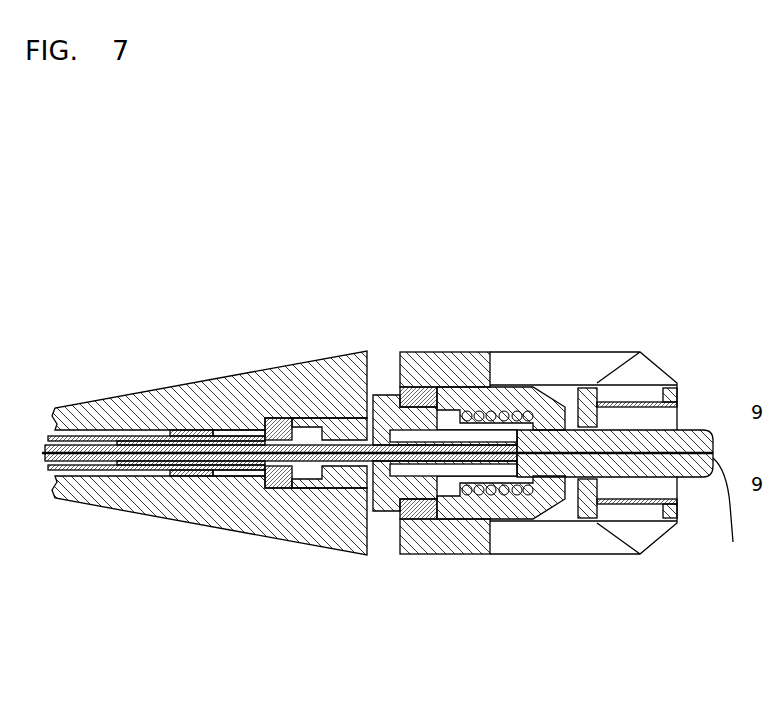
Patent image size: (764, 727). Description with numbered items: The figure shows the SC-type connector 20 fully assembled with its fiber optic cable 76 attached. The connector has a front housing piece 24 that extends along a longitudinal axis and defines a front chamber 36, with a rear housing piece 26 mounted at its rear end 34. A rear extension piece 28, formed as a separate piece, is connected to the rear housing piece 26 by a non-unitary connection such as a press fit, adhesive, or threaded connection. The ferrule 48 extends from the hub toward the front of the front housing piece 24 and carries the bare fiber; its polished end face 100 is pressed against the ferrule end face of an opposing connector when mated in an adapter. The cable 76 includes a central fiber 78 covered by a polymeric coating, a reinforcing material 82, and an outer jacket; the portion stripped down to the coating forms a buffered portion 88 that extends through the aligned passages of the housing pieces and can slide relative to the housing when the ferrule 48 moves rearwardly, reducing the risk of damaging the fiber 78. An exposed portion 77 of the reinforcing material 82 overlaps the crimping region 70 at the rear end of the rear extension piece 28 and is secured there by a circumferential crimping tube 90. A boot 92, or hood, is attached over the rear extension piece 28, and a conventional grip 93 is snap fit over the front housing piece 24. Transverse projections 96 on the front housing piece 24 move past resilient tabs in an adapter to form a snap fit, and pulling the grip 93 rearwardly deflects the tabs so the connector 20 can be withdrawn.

The SC-type connector 20 is at (510, 250).
The front housing piece 24 is at (513, 555).
The rear housing piece 26 is at (384, 497).
The rear extension piece 28 is at (285, 488).
The rear end 34 is at (680, 402).
The front chamber 36 is at (400, 398).
The ferrule 48 is at (642, 478).
The crimping region 70 is at (225, 480).
The fiber optic cable 76 is at (70, 472).
The exposed portion of reinforcing material 77 is at (192, 440).
The central fiber 78 is at (574, 462).
The reinforcing material 82 is at (173, 430).
The buffered portion 88 is at (307, 466).
The circumferential crimping tube 90 is at (243, 430).
The boot 92 is at (127, 512).
The grip 93 is at (448, 554).
The transverse projections 96 is at (590, 386).
The polished end face 100 is at (730, 517).